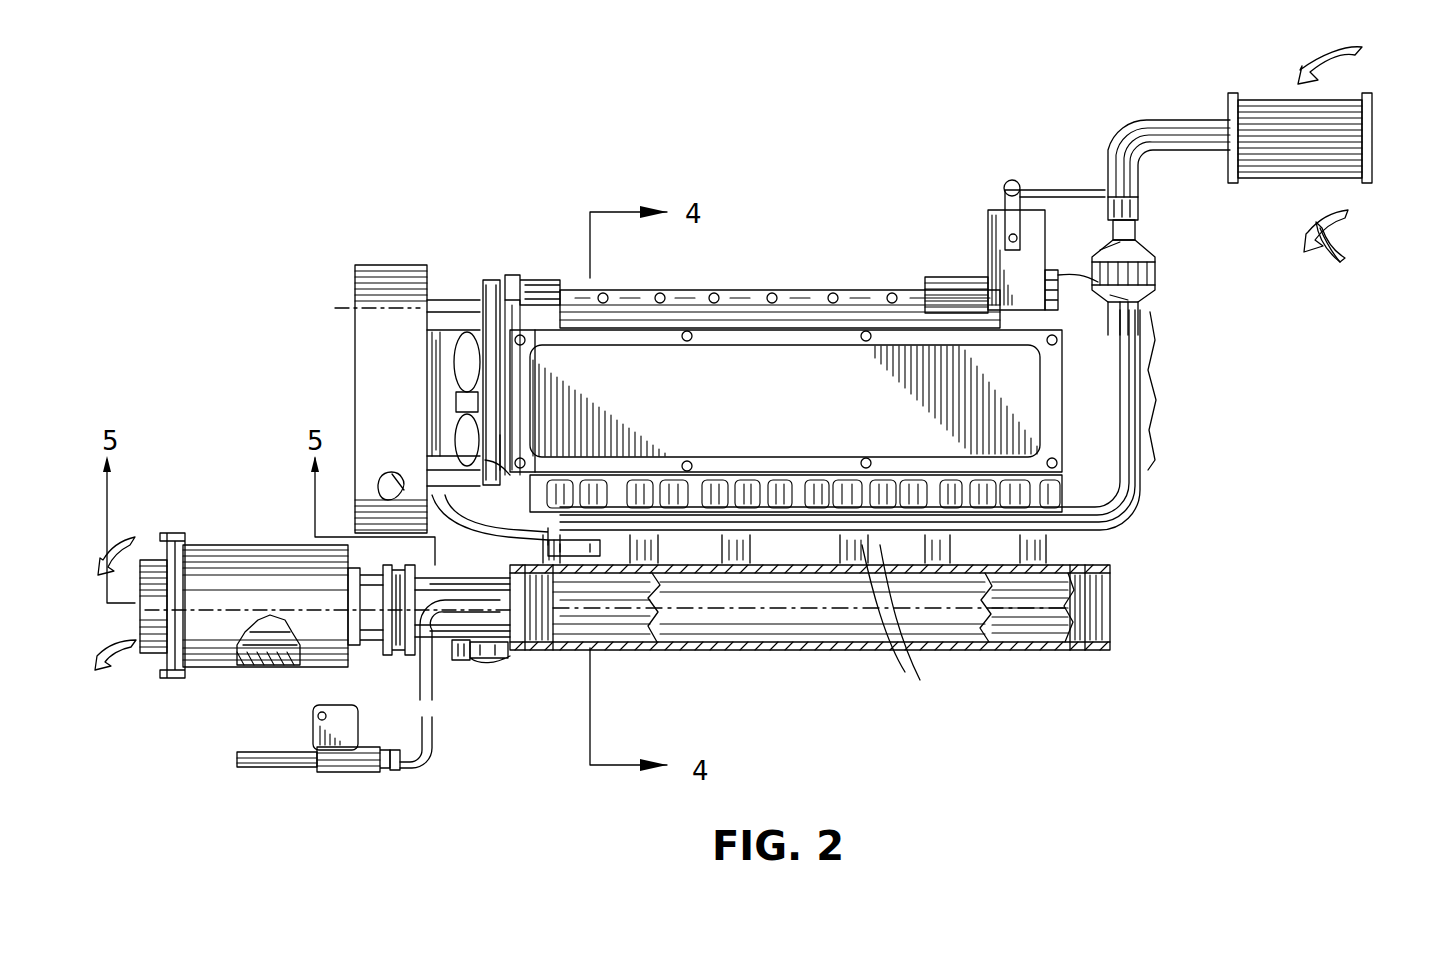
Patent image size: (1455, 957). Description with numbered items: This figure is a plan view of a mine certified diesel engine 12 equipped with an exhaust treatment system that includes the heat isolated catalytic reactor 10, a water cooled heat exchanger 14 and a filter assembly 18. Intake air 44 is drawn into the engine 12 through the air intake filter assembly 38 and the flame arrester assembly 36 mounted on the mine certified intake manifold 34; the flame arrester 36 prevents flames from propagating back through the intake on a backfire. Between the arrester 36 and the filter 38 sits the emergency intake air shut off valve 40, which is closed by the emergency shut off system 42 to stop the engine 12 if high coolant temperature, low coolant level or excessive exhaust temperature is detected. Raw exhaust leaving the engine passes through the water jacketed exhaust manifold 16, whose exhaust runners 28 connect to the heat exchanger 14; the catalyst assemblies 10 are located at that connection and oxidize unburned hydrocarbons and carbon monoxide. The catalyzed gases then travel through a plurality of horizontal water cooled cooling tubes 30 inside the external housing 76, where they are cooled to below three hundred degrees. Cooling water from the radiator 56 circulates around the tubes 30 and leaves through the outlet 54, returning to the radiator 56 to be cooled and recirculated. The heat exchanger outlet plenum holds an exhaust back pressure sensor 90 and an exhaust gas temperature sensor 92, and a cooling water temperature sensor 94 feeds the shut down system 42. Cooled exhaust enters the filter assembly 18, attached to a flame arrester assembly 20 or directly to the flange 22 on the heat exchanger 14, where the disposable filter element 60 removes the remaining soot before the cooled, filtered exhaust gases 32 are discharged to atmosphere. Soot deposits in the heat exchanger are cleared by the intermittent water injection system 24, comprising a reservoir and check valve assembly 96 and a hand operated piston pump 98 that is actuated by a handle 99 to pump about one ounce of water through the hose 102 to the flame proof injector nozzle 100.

The catalytic reactor 10 is at (342, 226).
The diesel engine 12 is at (730, 282).
The exhaust gas heat exchanger 14 is at (1125, 607).
The exhaust manifold 16 is at (1070, 538).
The particulate filter assembly 18 is at (272, 540).
The flame arrester assembly 20 is at (390, 645).
The flange 22 is at (412, 648).
The water injection system 24 is at (430, 757).
The exhaust runners 28 is at (905, 672).
The cooling tubes 30 is at (620, 632).
The cooled, filtered exhaust gases 32 is at (112, 550).
The intake manifold 34 is at (1140, 516).
The flame arrester assembly 36 is at (1150, 290).
The air intake filter assembly 38 is at (1335, 180).
The emergency intake air shut off valve 40 is at (1140, 206).
The emergency shut off system 42 is at (985, 252).
The intake air 44 is at (1342, 244).
The outlet 54 is at (555, 530).
The radiator 56 is at (355, 309).
The filter element 60 is at (265, 655).
The external housing 76 is at (1020, 644).
The exhaust back pressure sensor 90 is at (443, 650).
The exhaust gas temperature sensor 92 is at (462, 660).
The cooling water temperature sensor 94 is at (605, 548).
The reservoir and check valve assembly 96 is at (313, 724).
The hand operated piston pump 98 is at (330, 772).
The handle 99 is at (248, 770).
The flame proof injector nozzle 100 is at (490, 658).
The hose 102 is at (438, 718).